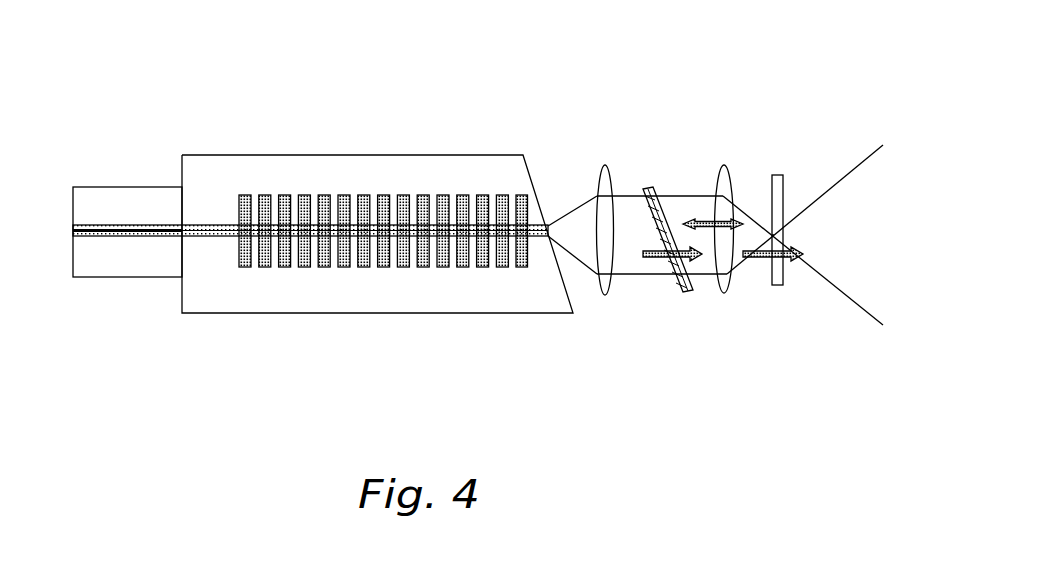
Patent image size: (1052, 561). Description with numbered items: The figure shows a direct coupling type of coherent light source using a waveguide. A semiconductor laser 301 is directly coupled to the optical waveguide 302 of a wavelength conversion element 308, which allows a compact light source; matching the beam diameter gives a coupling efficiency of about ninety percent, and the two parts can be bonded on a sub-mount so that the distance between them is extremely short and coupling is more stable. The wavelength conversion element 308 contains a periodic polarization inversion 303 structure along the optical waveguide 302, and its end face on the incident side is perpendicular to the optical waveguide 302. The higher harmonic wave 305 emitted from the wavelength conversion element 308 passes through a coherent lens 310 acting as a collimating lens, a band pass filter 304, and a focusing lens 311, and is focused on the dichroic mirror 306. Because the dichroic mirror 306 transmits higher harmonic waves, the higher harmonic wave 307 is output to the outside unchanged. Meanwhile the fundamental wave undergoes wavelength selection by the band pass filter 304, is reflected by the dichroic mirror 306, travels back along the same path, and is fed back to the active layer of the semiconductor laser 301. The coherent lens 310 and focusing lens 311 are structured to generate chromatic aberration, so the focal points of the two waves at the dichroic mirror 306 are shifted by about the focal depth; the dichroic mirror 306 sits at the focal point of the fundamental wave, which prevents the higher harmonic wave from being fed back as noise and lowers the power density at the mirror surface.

The semiconductor laser 301 is at (93, 197).
The optical waveguide 302 is at (334, 212).
The polarization inversion 303 is at (410, 202).
The band pass filter 304 is at (655, 190).
The higher harmonic wave 305 is at (723, 303).
The dichroic mirror 306 is at (775, 175).
The higher harmonic wave 307 is at (712, 212).
The wavelength conversion element 308 is at (357, 288).
The coherent lens 310 is at (605, 281).
The focusing lens 311 is at (773, 234).